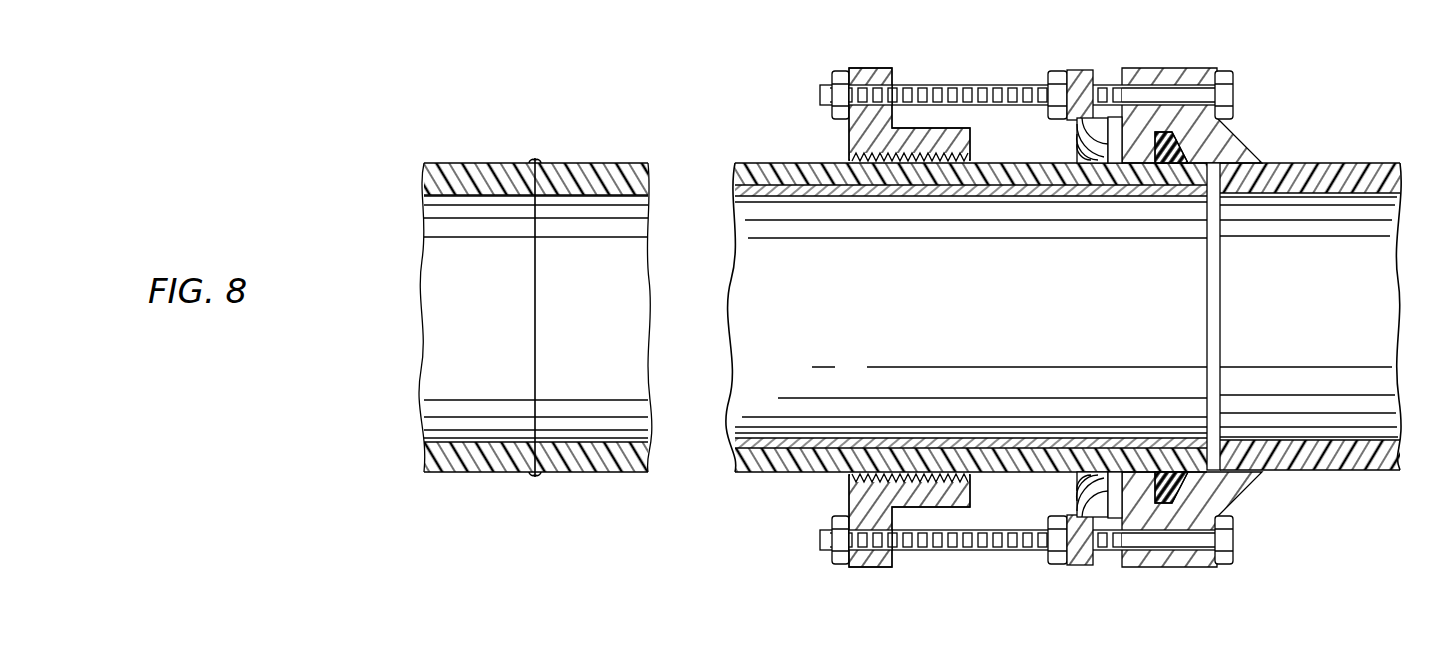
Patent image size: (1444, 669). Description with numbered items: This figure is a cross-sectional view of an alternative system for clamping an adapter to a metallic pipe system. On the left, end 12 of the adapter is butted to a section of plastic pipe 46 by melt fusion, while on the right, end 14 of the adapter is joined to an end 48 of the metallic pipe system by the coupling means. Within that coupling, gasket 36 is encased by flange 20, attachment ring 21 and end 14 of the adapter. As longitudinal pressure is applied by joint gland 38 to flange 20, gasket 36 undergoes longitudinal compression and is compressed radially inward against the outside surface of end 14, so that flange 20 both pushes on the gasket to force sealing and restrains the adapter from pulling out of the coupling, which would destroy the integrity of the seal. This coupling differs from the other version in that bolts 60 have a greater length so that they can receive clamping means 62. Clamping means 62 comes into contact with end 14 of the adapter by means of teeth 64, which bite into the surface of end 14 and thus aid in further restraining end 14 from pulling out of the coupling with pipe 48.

The end of the adapter 12 is at (580, 163).
The end of the adapter 14 is at (1021, 474).
The flange 20 is at (1111, 117).
The attachment ring 21 is at (1245, 148).
The gasket 36 is at (1183, 140).
The joint gland 38 is at (1077, 497).
The plastic pipe 46 is at (458, 163).
The end of metallic pipe system 48 is at (1378, 162).
The bolts 60 is at (995, 84).
The clamping means 62 is at (867, 567).
The teeth 64 is at (848, 158).